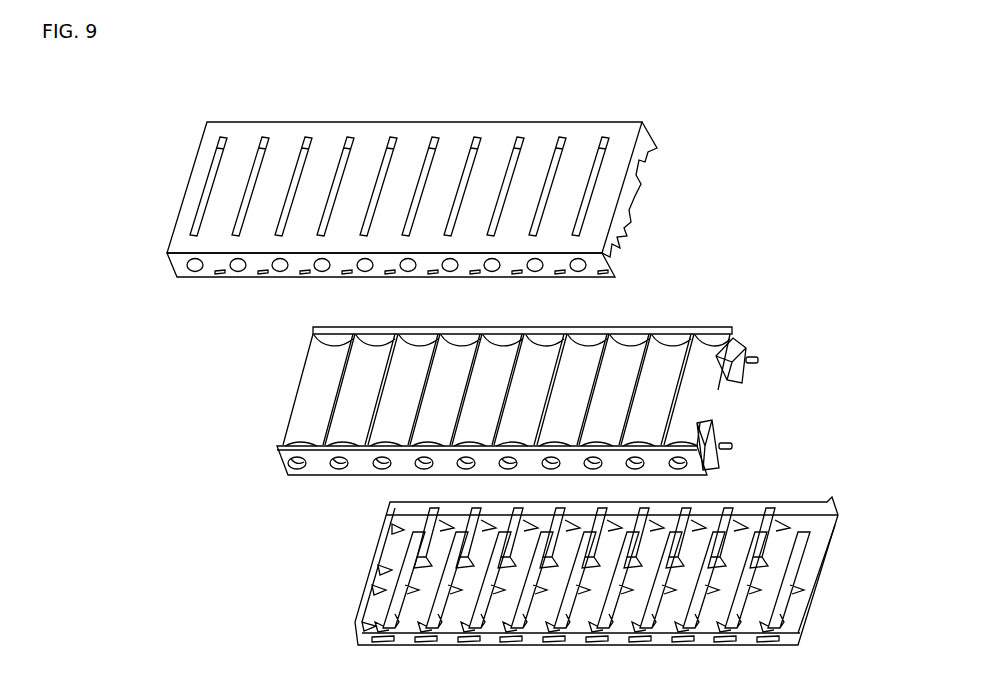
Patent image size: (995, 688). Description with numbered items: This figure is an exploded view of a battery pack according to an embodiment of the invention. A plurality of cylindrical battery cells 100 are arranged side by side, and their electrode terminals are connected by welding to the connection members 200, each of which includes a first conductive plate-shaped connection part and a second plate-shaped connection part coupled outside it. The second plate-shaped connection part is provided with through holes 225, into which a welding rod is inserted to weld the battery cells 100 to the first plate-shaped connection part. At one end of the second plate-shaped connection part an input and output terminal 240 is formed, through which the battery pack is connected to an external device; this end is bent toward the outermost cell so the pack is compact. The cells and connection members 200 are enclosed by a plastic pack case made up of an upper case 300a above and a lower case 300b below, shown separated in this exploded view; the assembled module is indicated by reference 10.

The upper case 300a is at (168, 201).
The lower case 300b is at (328, 618).
The cylindrical battery cells 100 is at (516, 374).
The connection members 200 is at (514, 406).
The through holes 225 is at (375, 463).
The input and output terminal 240 is at (745, 352).
The battery module 10 is at (693, 405).